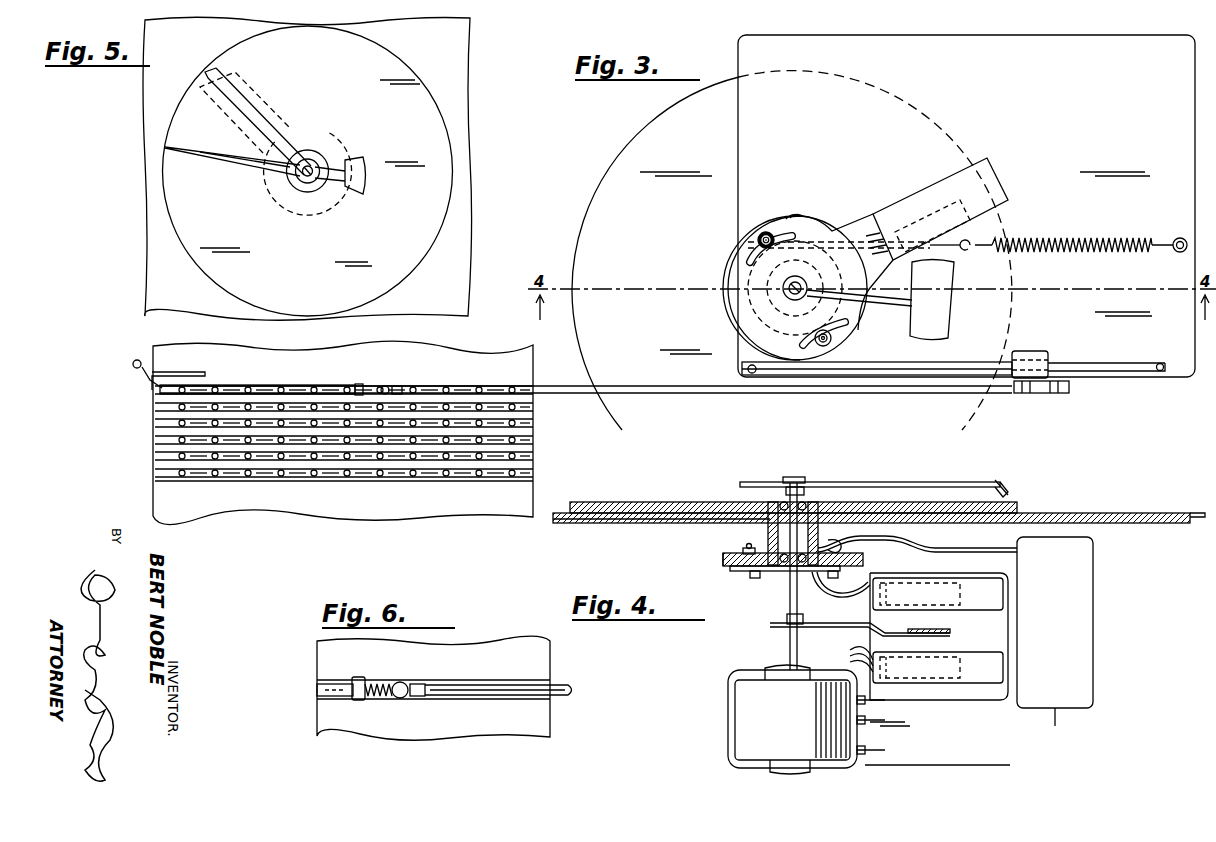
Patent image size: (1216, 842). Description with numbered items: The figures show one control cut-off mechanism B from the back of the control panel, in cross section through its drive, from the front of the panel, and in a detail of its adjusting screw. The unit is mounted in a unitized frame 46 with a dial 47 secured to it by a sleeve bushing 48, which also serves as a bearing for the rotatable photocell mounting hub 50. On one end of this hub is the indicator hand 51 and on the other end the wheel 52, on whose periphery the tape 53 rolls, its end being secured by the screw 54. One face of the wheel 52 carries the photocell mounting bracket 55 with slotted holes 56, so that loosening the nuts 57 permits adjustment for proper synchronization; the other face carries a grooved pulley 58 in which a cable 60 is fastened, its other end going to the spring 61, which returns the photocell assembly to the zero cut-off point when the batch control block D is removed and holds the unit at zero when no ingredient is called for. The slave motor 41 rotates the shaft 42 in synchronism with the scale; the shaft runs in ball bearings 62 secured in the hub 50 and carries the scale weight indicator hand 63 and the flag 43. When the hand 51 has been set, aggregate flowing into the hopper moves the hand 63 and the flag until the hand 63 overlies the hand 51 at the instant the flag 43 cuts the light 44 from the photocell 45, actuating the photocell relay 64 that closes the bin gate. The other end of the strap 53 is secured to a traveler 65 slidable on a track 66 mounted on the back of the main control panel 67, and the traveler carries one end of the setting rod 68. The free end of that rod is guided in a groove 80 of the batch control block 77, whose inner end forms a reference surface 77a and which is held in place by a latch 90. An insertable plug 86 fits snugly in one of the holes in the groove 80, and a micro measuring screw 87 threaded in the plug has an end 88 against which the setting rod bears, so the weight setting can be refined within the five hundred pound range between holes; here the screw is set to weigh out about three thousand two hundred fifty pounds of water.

In FIG. 4, the slave motor 41 is at (787, 725).
In FIG. 5, the shaft 42 is at (305, 180).
In FIG. 3, the shaft 42 is at (785, 298).
In FIG. 4, the shaft 42 is at (790, 643).
In FIG. 5, the flag 43 is at (205, 168).
In FIG. 3, the flag 43 is at (950, 312).
In FIG. 4, the flag 43 is at (945, 630).
In FIG. 3, the light 44 is at (905, 193).
In FIG. 4, the light 44 is at (960, 662).
In FIG. 4, the photocell 45 is at (966, 596).
In FIG. 4, the unitized frame 46 is at (1060, 513).
In FIG. 5, the dial 47 is at (342, 142).
In FIG. 4, the dial 47 is at (668, 502).
In FIG. 4, the sleeve bushing 48 is at (768, 540).
In FIG. 5, the photocell mounting hub 50 is at (327, 162).
In FIG. 4, the photocell mounting hub 50 is at (752, 575).
In FIG. 5, the indicator hand 51 is at (245, 100).
In FIG. 4, the indicator hand 51 is at (1008, 497).
In FIG. 5, the wheel 52 is at (327, 128).
In FIG. 3, the wheel 52 is at (815, 225).
In FIG. 4, the wheel 52 is at (865, 560).
In FIG. 3, the tape 53 is at (762, 226).
In FIG. 4, the tape 53 is at (723, 560).
In FIG. 3, the screw 54 is at (795, 216).
In FIG. 5, the photocell mounting bracket 55 is at (240, 70).
In FIG. 3, the photocell mounting bracket 55 is at (943, 178).
In FIG. 4, the photocell mounting bracket 55 is at (925, 578).
In FIG. 3, the slotted holes 56 is at (752, 260).
In FIG. 3, the nuts 57 is at (762, 232).
In FIG. 4, the nuts 57 is at (760, 578).
In FIG. 4, the grooved pulley 58 is at (843, 546).
In FIG. 3, the cable 60 is at (965, 250).
In FIG. 4, the cable 60 is at (743, 551).
In FIG. 3, the spring 61 is at (1060, 242).
In FIG. 4, the ball bearings 62 is at (780, 503).
In FIG. 5, the scale weight indicator hand 63 is at (250, 163).
In FIG. 4, the scale weight indicator hand 63 is at (925, 482).
In FIG. 4, the photocell relay 64 is at (1069, 615).
In FIG. 3, the traveler 65 is at (1040, 350).
In FIG. 3, the track 66 is at (1105, 365).
In FIG. 5, the main control panel 67 is at (456, 50).
In FIG. 3, the main control panel 67 is at (862, 250).
In FIG. 4, the main control panel 67 is at (1120, 513).
In FIG. 3, the setting rod 68 is at (692, 392).
In FIG. 6, the setting rod 68 is at (562, 686).
In FIG. 3, the batch control block 77 is at (153, 448).
In FIG. 3, the reference surface 77a is at (534, 431).
In FIG. 3, the grooves 80 is at (262, 388).
In FIG. 6, the grooves 80 is at (318, 690).
In FIG. 3, the insertable plug 86 is at (388, 387).
In FIG. 6, the insertable plug 86 is at (406, 683).
In FIG. 3, the micro measuring screw 87 is at (360, 384).
In FIG. 6, the micro measuring screw 87 is at (378, 680).
In FIG. 3, the end of the screw 88 is at (400, 393).
In FIG. 6, the end of the screw 88 is at (425, 698).
In FIG. 3, the latch 90 is at (140, 362).
In FIG. 3, the control cut-off mechanism B is at (1063, 101).
In FIG. 3, the batch control block D is at (168, 485).